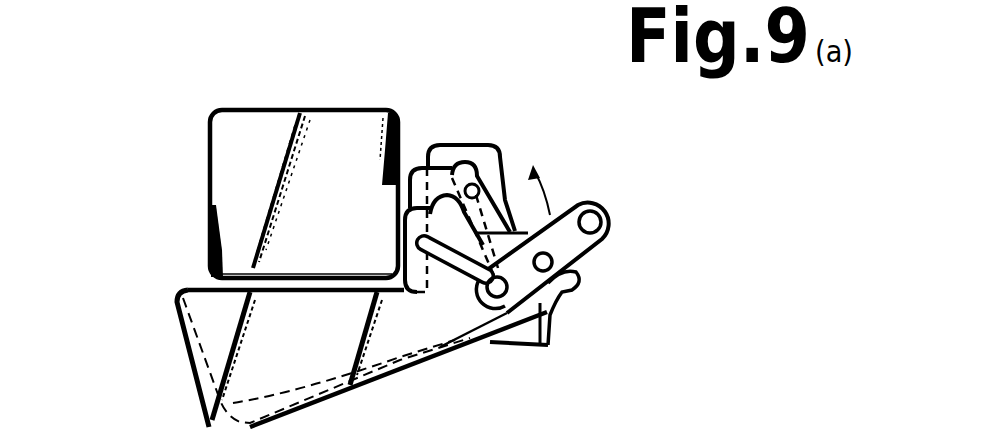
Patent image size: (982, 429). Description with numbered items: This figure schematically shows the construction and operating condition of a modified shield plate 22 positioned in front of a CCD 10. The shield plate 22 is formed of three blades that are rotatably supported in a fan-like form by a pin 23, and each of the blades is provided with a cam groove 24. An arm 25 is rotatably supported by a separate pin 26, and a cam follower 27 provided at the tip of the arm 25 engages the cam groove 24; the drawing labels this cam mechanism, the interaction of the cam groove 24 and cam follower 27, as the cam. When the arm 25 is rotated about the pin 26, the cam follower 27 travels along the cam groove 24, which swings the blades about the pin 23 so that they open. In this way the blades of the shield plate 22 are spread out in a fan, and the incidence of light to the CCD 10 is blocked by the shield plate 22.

The CCD 10 is at (313, 130).
The shield plate 22 is at (172, 374).
The pin 23 is at (563, 293).
The cam groove 24 is at (482, 192).
The arm 25 is at (603, 245).
The pin 26 is at (592, 222).
The cam follower 27 is at (543, 338).
The element cam is at (463, 168).